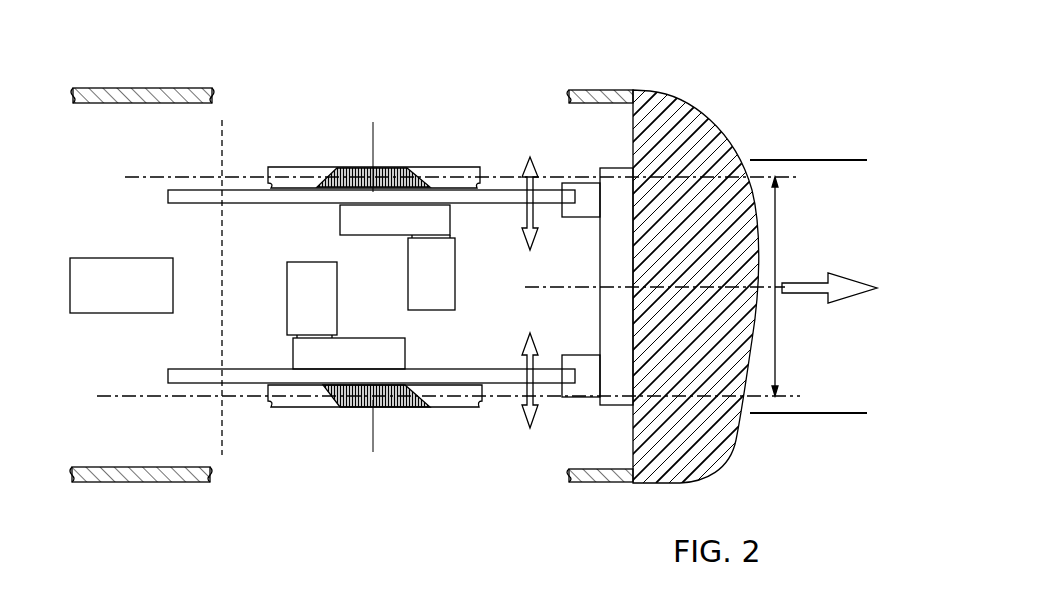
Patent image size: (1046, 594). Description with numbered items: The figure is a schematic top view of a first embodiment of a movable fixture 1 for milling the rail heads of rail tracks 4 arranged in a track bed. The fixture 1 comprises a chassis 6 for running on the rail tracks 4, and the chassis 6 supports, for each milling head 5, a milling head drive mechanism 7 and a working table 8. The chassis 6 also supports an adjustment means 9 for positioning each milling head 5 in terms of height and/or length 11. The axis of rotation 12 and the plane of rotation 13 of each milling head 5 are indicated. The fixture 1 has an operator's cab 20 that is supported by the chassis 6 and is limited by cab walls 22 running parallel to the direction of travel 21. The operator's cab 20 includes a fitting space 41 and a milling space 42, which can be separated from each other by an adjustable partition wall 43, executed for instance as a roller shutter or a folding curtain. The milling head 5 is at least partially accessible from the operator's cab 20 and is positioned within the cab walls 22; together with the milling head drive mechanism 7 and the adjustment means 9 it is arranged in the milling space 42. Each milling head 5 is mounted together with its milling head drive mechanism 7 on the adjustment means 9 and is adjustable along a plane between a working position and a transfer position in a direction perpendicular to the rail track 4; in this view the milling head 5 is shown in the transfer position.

The movable fixture 1 is at (538, 53).
The rail track 4 is at (805, 160).
The milling head 5 is at (316, 146).
The chassis 6 is at (698, 147).
The milling head drive mechanism 7 is at (432, 217).
The working table 8 is at (128, 285).
The adjustment means 9 is at (588, 198).
The length 11 is at (533, 180).
The axis of rotation 12 is at (373, 146).
The plane of rotation 13 is at (182, 177).
The operator's cab 20 is at (240, 290).
The direction of travel 21 is at (800, 290).
The cab wall 22 is at (138, 102).
The fitting space 41 is at (188, 239).
The milling space 42 is at (278, 239).
The partition wall 43 is at (220, 331).